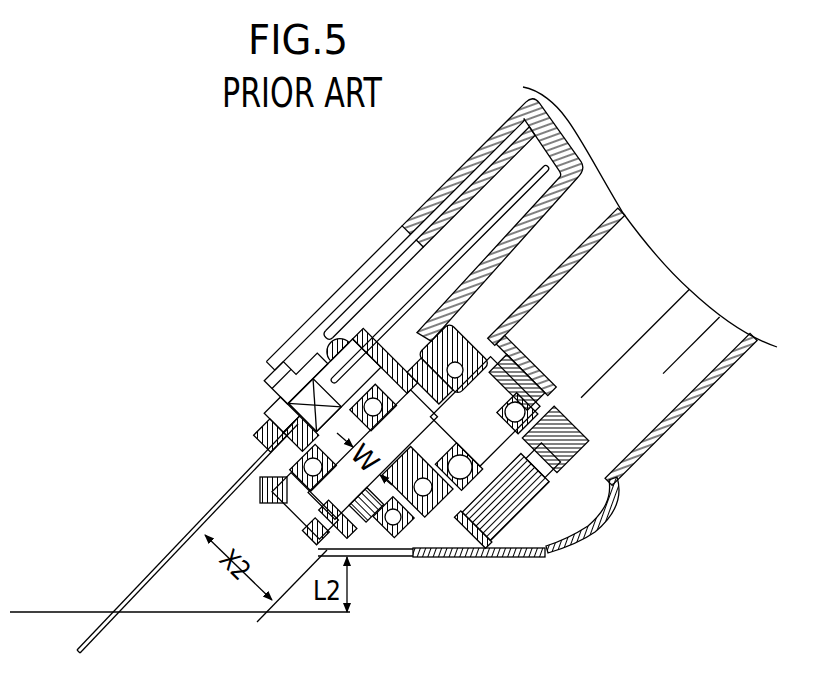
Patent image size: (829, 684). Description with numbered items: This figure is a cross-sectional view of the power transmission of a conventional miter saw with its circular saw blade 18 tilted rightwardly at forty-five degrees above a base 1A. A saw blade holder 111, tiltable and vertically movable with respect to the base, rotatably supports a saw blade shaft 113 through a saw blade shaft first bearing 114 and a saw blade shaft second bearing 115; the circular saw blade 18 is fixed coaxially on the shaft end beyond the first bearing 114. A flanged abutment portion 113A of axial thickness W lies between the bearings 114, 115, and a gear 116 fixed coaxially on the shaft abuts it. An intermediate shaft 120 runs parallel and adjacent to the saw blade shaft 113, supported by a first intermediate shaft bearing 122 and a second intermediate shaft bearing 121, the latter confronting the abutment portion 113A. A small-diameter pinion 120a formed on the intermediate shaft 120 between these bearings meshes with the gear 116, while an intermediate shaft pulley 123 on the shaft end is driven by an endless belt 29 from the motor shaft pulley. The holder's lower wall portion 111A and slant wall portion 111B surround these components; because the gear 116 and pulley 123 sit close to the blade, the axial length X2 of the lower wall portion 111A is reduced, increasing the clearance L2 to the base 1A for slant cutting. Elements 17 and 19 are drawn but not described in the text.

The base 1A is at (57, 612).
The end cap 17 is at (267, 373).
The circular saw blade 18 is at (200, 522).
The outer housing 19 is at (533, 210).
The endless belt 29 is at (682, 420).
The saw blade holder 111 is at (612, 237).
The lower wall portion 111A is at (300, 548).
The slant wall portion 111B is at (403, 555).
The saw blade shaft 113 is at (287, 433).
The flanged abutment portion 113A is at (333, 362).
The saw blade shaft first bearing 114 is at (283, 475).
The saw blade shaft second bearing 115 is at (395, 524).
The gear 116 is at (375, 495).
The intermediate shaft 120 is at (345, 382).
The pinion 120a is at (487, 357).
The second intermediate shaft bearing 121 is at (420, 360).
The first intermediate shaft bearing 122 is at (603, 480).
The intermediate shaft pulley 123 is at (520, 550).